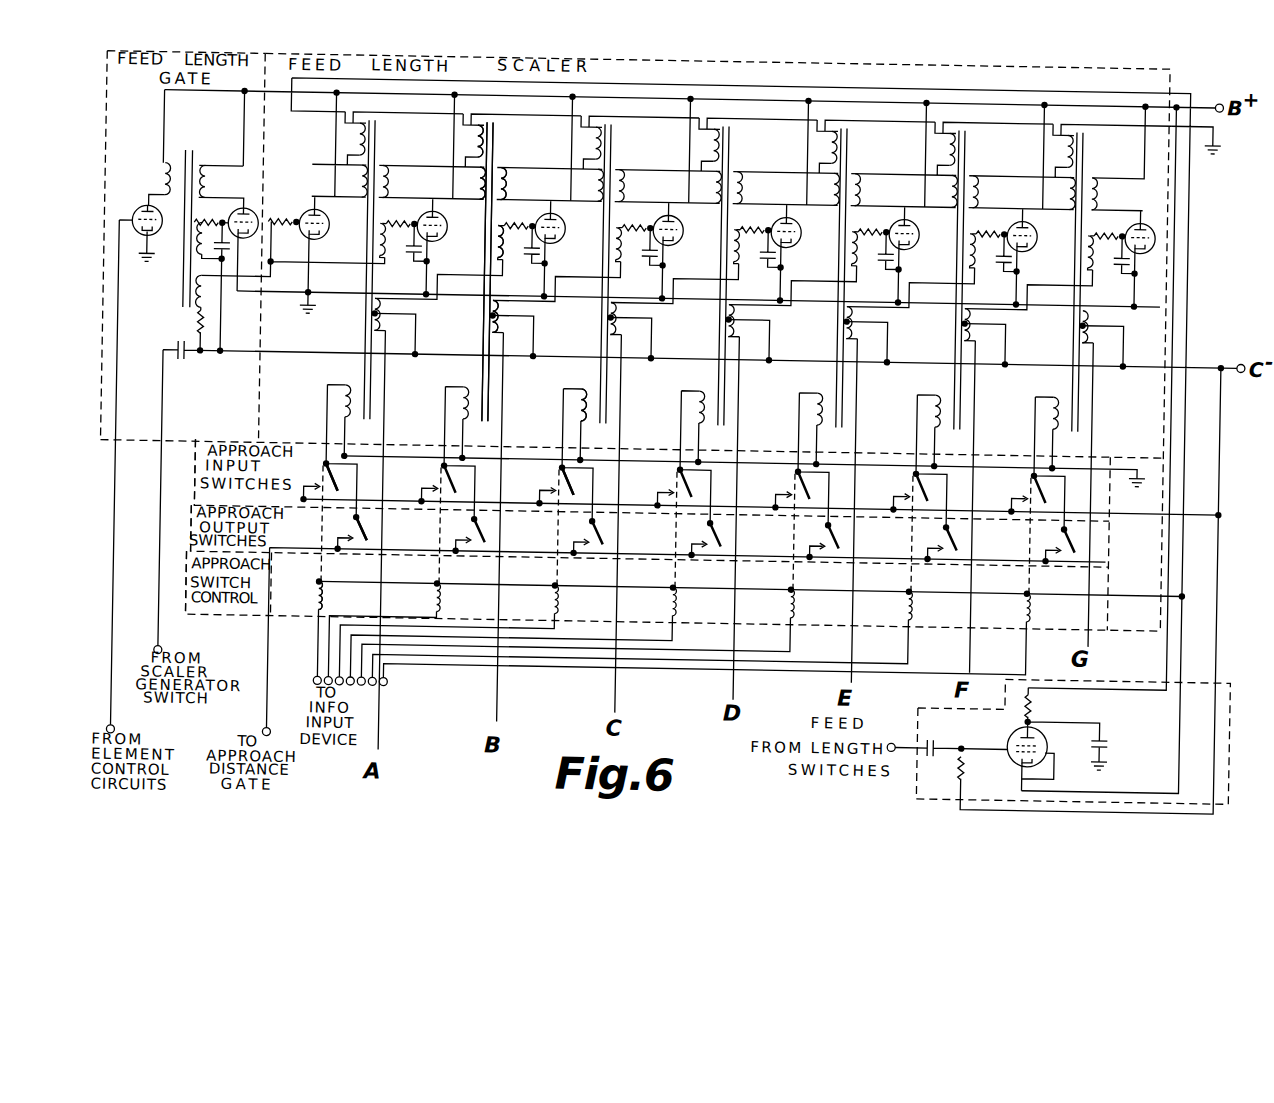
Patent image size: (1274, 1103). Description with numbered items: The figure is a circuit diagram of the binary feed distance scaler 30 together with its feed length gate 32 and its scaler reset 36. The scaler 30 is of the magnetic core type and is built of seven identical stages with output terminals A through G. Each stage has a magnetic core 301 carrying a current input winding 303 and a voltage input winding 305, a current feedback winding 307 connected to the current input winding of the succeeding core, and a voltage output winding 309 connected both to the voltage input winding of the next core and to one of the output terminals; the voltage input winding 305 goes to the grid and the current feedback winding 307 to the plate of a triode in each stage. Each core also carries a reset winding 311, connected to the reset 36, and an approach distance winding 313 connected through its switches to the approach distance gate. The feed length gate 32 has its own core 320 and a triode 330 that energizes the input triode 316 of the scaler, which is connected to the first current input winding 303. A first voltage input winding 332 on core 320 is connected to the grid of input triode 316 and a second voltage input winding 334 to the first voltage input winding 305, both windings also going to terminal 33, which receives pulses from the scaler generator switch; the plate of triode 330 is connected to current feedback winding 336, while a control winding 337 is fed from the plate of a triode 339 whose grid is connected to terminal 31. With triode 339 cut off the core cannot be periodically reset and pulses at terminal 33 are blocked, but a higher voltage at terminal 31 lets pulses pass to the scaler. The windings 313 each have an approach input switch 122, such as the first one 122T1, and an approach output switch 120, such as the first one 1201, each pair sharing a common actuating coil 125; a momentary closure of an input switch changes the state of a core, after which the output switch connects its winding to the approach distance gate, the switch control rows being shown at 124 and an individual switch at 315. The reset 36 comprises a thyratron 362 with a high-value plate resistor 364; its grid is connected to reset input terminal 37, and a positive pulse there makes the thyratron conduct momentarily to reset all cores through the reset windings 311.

The feed length gate 32 is at (190, 53).
The binary feed distance scaler 30 is at (817, 64).
The control winding 337 is at (160, 184).
The core 320 is at (187, 168).
The triode 339 is at (142, 215).
The current feedback winding 336 is at (203, 203).
The triode 330 is at (250, 217).
The input triode 316 is at (329, 237).
The second voltage input winding 334 is at (192, 256).
The first voltage input winding 332 is at (191, 298).
The reset winding 311 is at (470, 141).
The current input winding 303 is at (476, 187).
The magnetic core 301 is at (489, 157).
The current feedback winding 307 is at (509, 185).
The voltage input winding 305 is at (496, 257).
The voltage output winding 309 is at (500, 320).
The approach distance winding 313 is at (583, 394).
The approach input switch 315 is at (564, 471).
The approach input switch 122 is at (197, 479).
The approach output switch 120 is at (195, 531).
The approach switch control 124 is at (192, 594).
The approach input switch 122T1 is at (372, 483).
The approach output switch 1201 is at (376, 535).
The actuating coil 125 is at (327, 605).
The terminal 33 is at (160, 656).
The terminal 31 is at (122, 739).
The scaler reset 36 is at (1232, 673).
The scaler reset input terminal 37 is at (900, 739).
The thyratron 362 is at (1016, 736).
The plate resistor 364 is at (1042, 703).